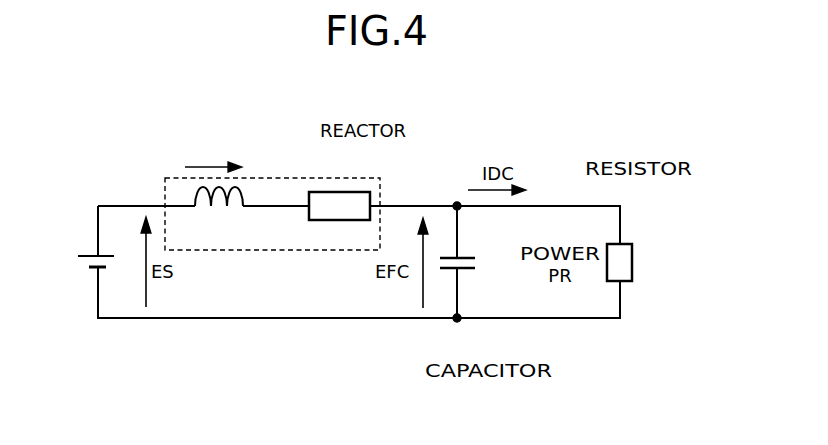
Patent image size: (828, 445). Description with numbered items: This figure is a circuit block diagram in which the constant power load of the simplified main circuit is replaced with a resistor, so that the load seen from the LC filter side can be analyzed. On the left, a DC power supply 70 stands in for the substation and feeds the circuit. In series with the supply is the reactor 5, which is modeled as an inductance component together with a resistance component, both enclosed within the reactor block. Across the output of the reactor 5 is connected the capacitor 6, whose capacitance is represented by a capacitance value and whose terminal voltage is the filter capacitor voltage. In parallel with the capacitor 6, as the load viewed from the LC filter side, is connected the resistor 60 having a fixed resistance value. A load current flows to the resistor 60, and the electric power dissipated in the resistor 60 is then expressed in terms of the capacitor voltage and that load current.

The DC power supply 70 is at (92, 255).
The reactor 5 is at (314, 178).
The capacitor 6 is at (467, 270).
The resistor 60 is at (627, 244).